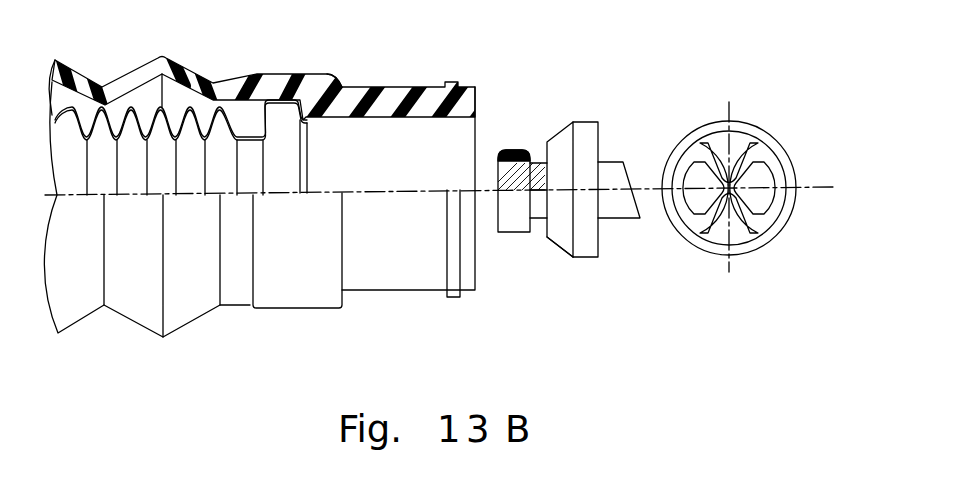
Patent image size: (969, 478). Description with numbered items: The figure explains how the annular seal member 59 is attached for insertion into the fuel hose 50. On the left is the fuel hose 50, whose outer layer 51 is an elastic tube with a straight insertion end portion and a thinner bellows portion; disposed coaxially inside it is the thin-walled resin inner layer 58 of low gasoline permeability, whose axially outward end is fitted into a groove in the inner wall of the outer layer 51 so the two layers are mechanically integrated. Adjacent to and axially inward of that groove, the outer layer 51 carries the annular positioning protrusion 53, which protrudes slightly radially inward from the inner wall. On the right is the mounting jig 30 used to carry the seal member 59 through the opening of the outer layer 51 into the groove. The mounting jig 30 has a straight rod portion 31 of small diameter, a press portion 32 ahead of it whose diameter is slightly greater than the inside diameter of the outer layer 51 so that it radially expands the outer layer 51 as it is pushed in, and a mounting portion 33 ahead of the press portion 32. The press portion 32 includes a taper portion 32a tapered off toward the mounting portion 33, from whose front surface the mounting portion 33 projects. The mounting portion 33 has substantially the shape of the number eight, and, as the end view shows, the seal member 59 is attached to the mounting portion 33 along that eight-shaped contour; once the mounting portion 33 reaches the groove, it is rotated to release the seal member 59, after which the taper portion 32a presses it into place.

The mounting jig 30 is at (662, 183).
The rod portion 31 is at (626, 219).
The press portion 32 is at (560, 126).
The taper portion 32a is at (562, 255).
The mounting portion 33 is at (538, 220).
The fuel hose 50 is at (331, 71).
The outer layer 51 is at (340, 81).
The positioning protrusion 53 is at (273, 102).
The inner layer 58 is at (63, 77).
The seal member 59 is at (508, 148).